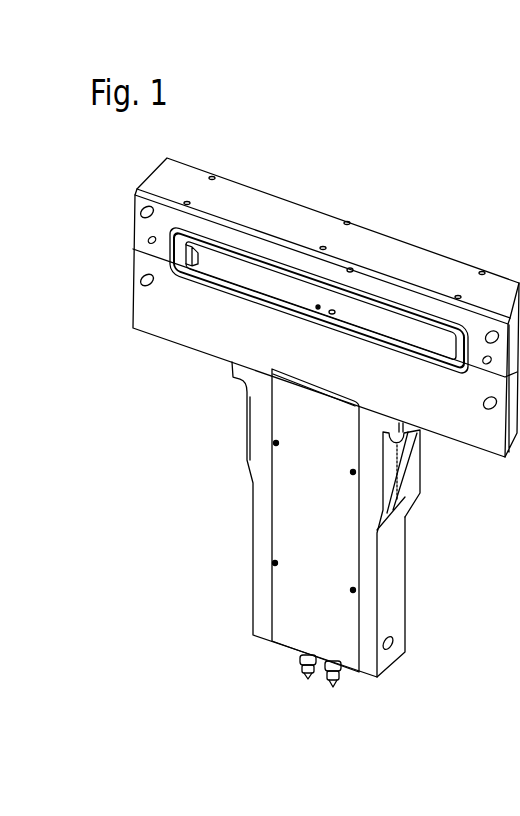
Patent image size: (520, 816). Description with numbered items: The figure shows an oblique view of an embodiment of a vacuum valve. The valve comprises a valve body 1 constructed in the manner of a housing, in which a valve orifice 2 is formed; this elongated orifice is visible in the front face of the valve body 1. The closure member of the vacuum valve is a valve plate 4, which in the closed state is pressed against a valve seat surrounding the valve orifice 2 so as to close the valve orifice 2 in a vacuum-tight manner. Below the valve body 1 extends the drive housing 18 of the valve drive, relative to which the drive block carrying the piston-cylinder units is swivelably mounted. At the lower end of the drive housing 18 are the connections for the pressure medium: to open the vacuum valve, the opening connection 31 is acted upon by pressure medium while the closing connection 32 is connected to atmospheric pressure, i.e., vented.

The valve body 1 is at (116, 310).
The valve orifice 2 is at (238, 263).
The valve plate 4 is at (245, 283).
The drive housing 18 is at (260, 517).
The opening connection 31 is at (342, 688).
The closing connection 32 is at (307, 677).